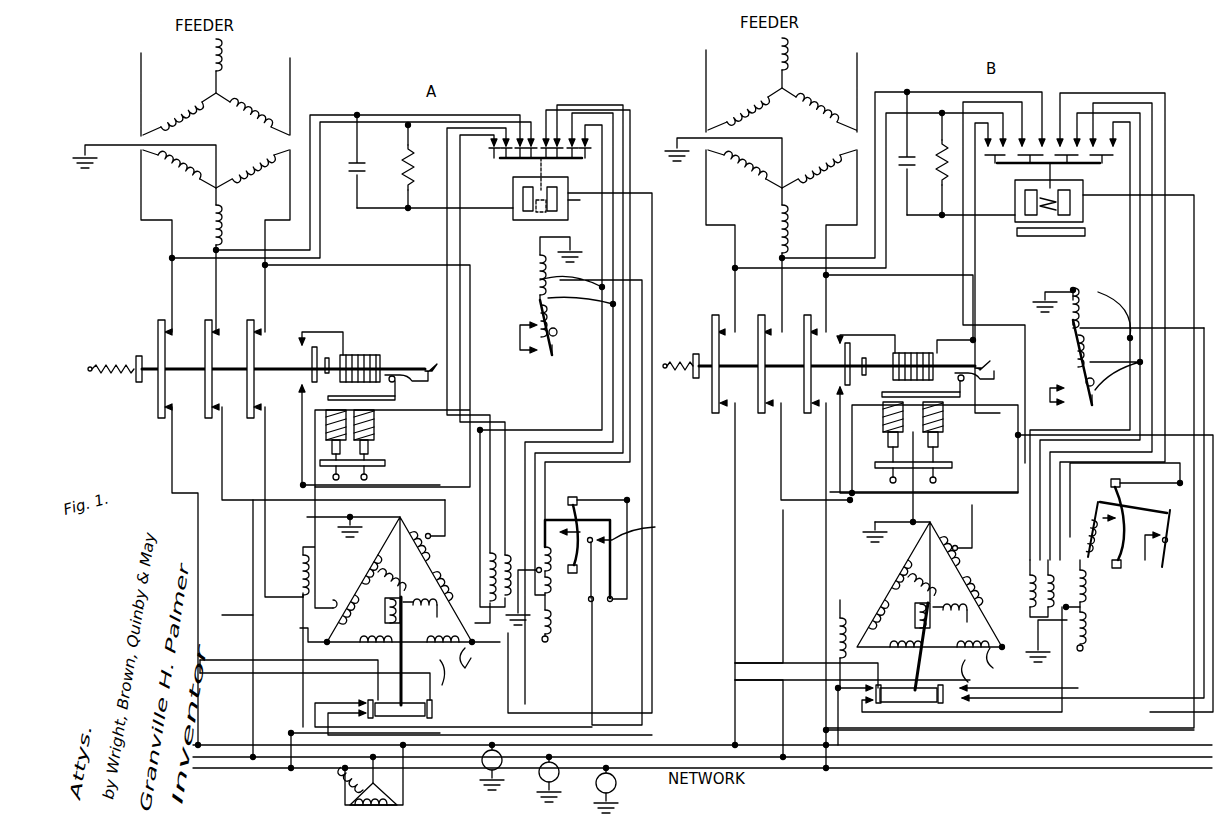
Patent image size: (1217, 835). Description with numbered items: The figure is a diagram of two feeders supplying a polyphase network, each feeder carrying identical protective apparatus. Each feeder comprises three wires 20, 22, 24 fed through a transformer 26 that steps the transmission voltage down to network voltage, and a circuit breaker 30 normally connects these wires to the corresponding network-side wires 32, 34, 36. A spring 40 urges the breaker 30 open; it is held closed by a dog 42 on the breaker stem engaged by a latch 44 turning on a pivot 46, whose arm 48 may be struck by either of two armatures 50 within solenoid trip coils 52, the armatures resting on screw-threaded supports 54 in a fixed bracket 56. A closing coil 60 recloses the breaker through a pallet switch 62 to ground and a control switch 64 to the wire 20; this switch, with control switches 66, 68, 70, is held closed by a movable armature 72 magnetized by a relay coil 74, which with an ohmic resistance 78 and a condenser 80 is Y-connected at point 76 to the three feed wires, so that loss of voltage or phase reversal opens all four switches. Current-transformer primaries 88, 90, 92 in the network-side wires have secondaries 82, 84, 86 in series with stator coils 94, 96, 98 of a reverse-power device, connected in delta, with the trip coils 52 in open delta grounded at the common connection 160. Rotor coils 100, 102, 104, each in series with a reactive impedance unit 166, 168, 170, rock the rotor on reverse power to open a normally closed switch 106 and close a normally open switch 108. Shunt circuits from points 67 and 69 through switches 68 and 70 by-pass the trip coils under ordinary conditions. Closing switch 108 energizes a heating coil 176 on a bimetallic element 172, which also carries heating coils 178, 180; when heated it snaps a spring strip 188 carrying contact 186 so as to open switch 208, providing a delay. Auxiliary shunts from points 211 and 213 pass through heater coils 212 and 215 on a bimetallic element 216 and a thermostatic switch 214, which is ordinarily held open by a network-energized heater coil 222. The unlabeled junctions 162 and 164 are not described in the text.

The feed wire 20 is at (170, 274).
The feed wire 22 is at (216, 293).
The feed wire 24 is at (258, 293).
The transformer 26 is at (195, 93).
The circuit breaker 30 is at (558, 354).
The feed wire on network side 32 is at (170, 455).
The feed wire on network side 34 is at (215, 455).
The feed wire on network side 36 is at (255, 455).
The spring 40 is at (112, 362).
The dog 42 is at (416, 363).
The latch 44 is at (701, 388).
The pivot 46 is at (398, 400).
The arm 48 is at (390, 400).
The armature 50 is at (330, 445).
The solenoid coil 52 is at (324, 412).
The support 54 is at (368, 477).
The fixed bracket 56 is at (318, 468).
The closing coil 60 is at (358, 352).
The pallet switch 62 is at (298, 352).
The control switch 64 is at (505, 128).
The control switch 66 is at (538, 128).
The point 67 is at (300, 500).
The control switch 68 is at (564, 127).
The point 69 is at (478, 432).
The control switch 70 is at (586, 133).
The movable armature 72 is at (535, 230).
The relay coil 74 is at (515, 195).
The Y-connection 76 is at (413, 218).
The ohmic resistance 78 is at (403, 156).
The condenser 80 is at (355, 177).
The current transformer secondary 82 is at (732, 657).
The current transformer secondary 84 is at (424, 540).
The current transformer secondary 86 is at (355, 587).
The current transformer primary 88 is at (718, 677).
The current transformer primary 90 is at (436, 535).
The current transformer primary 92 is at (345, 593).
The stator coil 94 is at (633, 633).
The stator coil 96 is at (990, 590).
The stator coil 98 is at (664, 582).
The rotor coil 100 is at (898, 618).
The rotor coil 102 is at (698, 618).
The rotor coil 104 is at (659, 634).
The normally closed switch 106 is at (945, 665).
The normally open switch 108 is at (370, 700).
The common connection 160 is at (430, 488).
The conductor 162 is at (325, 642).
The conductor 164 is at (737, 638).
The impedance unit 166 is at (766, 571).
The impedance unit 168 is at (519, 528).
The impedance unit 170 is at (303, 555).
The bimetallic element 172 is at (555, 512).
The heating coil 176 is at (550, 633).
The heating coil 178 is at (548, 590).
The heating coil 180 is at (548, 568).
The contact point 186 is at (1138, 503).
The spring strip 188 is at (880, 500).
The switch 208 is at (1155, 533).
The point 211 is at (845, 347).
The heater coil 212 is at (530, 320).
The point 213 is at (872, 494).
The thermostatic switch 214 is at (821, 389).
The heater coil 215 is at (520, 348).
The bimetallic element 216 is at (838, 356).
The heater coil 222 is at (538, 284).